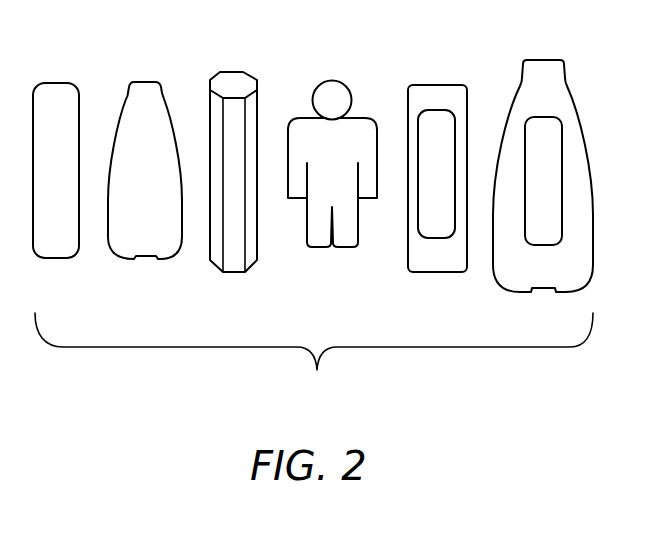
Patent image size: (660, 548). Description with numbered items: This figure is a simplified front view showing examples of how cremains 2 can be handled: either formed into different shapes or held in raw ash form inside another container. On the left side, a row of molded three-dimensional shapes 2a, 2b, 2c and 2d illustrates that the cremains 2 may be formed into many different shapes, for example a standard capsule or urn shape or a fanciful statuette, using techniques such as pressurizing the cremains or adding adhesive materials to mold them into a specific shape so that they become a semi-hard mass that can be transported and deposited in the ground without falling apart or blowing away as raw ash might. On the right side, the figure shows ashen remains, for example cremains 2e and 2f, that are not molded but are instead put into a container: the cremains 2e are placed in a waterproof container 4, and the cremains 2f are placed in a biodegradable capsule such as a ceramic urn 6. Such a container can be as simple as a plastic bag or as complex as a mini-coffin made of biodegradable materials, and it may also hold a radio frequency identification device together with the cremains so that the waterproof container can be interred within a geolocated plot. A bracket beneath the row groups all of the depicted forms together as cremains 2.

The cremains 2 is at (314, 356).
The three-dimensional shape 2a is at (57, 256).
The three-dimensional shape 2b is at (145, 257).
The three-dimensional shape 2c is at (233, 272).
The three-dimensional shape 2d is at (319, 248).
The cremains 2e is at (431, 110).
The cremains 2f is at (563, 177).
The waterproof container 4 is at (427, 171).
The ceramic urn 6 is at (559, 192).